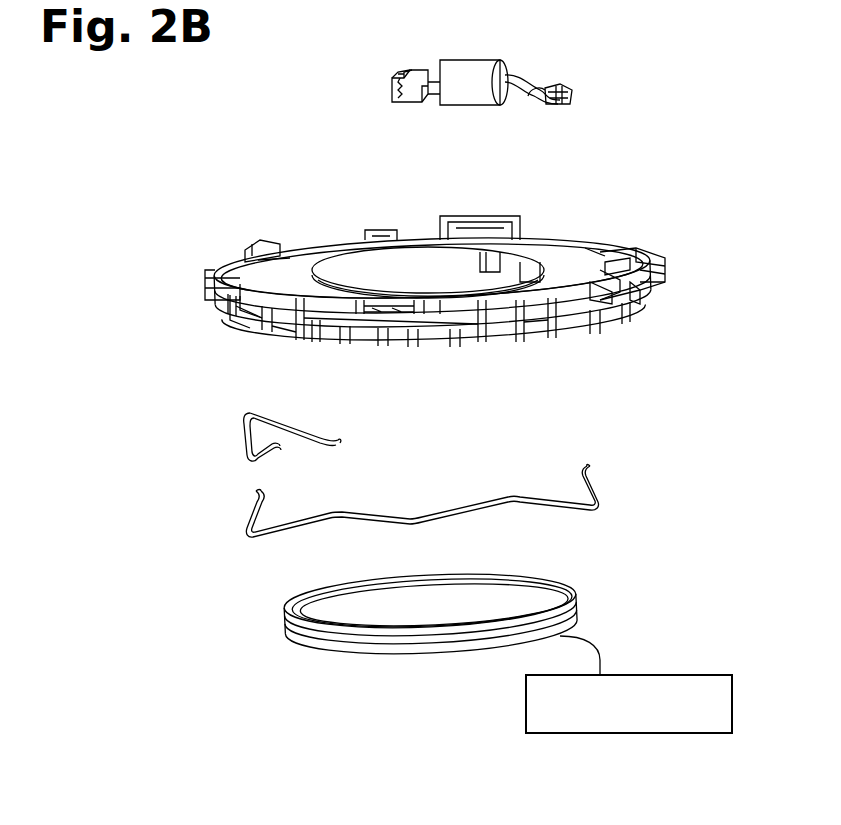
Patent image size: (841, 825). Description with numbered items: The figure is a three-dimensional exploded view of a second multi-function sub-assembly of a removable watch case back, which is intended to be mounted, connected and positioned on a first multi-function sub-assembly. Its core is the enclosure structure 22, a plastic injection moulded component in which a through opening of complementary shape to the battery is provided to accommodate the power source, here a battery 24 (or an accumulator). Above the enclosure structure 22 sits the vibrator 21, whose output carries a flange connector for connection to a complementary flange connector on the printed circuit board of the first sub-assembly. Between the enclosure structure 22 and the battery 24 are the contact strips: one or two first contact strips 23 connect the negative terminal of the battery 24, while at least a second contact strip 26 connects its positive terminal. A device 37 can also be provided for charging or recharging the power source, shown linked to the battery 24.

The vibrator 21 is at (480, 70).
The enclosure structure 22 is at (546, 250).
The first contact strip 23 is at (247, 430).
The second contact strip 26 is at (604, 492).
The battery 24 is at (286, 622).
The device for charging or recharging the power source 37 is at (647, 684).